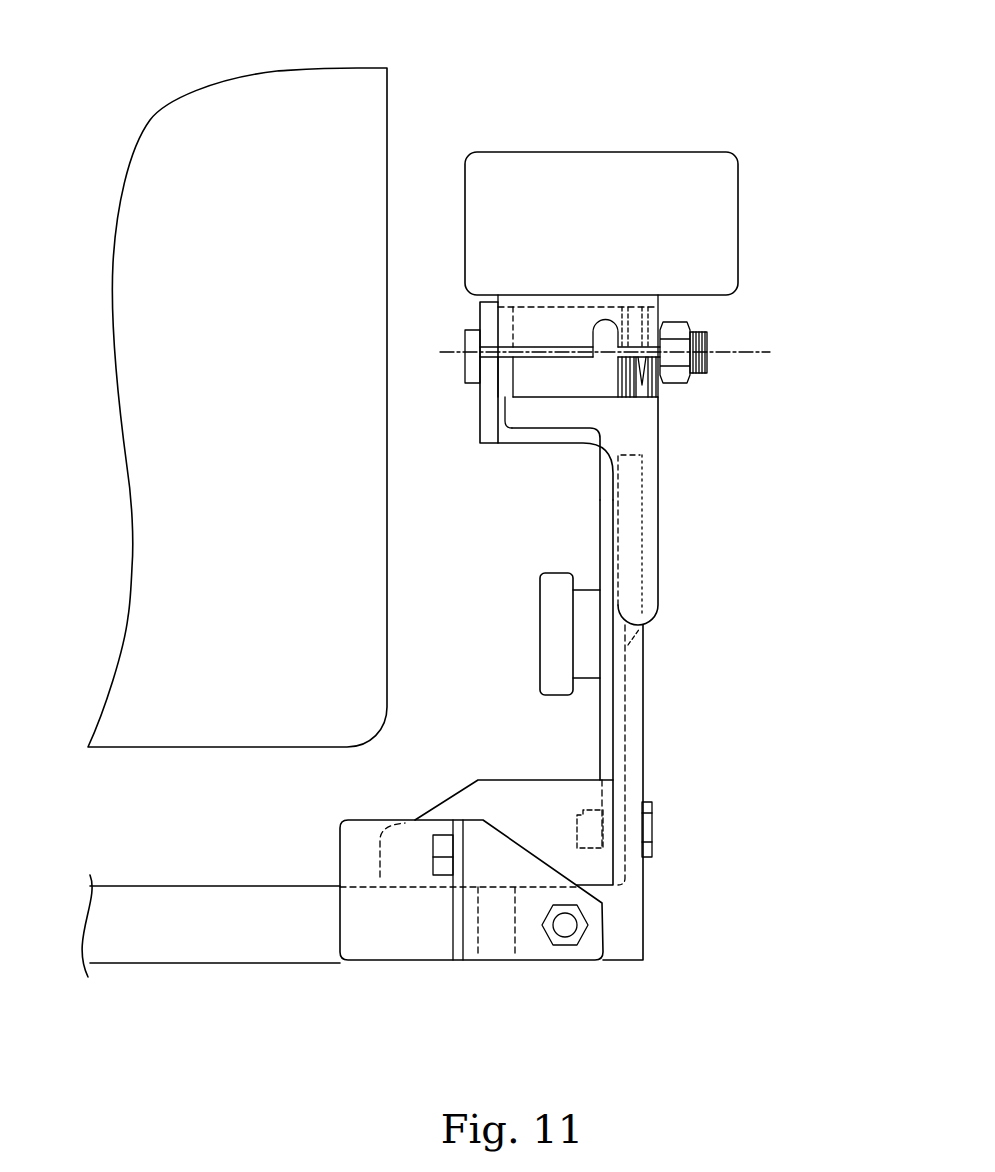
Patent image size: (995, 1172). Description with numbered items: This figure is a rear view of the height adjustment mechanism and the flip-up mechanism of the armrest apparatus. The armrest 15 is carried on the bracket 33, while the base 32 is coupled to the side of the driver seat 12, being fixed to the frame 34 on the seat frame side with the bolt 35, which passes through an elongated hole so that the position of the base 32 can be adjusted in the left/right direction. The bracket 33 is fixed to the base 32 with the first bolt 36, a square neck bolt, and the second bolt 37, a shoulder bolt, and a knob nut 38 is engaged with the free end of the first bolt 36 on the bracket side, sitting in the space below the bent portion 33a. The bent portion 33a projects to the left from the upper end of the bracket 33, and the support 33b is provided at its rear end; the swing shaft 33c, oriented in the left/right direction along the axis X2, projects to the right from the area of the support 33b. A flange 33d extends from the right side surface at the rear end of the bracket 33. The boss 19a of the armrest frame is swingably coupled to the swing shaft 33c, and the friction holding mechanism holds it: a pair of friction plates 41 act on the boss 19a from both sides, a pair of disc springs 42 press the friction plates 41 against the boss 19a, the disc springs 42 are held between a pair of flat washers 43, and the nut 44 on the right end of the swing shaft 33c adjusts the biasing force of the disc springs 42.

The driver seat 12 is at (283, 90).
The armrest 15 is at (592, 178).
The boss 19a is at (575, 400).
The base 32 is at (635, 742).
The bracket 33 is at (607, 745).
The bent portion 33a is at (547, 437).
The support 33b is at (498, 400).
The swing shaft 33c is at (708, 342).
The flange 33d is at (650, 548).
The frame 34 is at (243, 940).
The bolt 35 is at (567, 932).
The first bolt 36 is at (643, 632).
The second bolt 37 is at (655, 827).
The knob nut 38 is at (553, 635).
The friction plates 41 is at (548, 385).
The disc springs 42 is at (643, 390).
The flat washers 43 is at (657, 390).
The nut 44 is at (676, 320).
The axis X2 is at (624, 352).